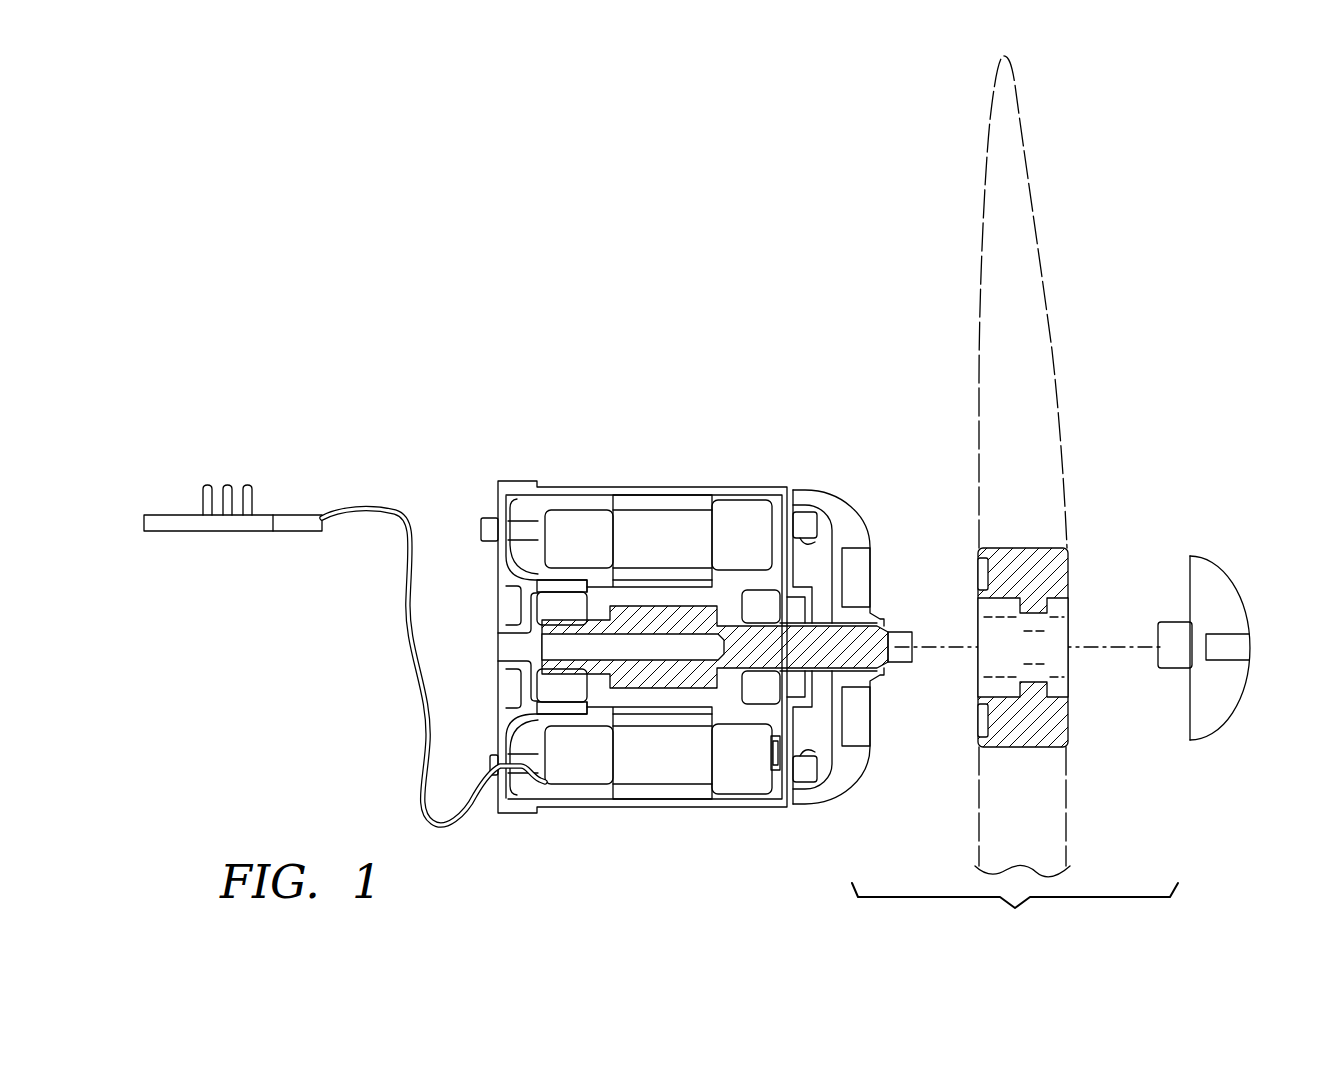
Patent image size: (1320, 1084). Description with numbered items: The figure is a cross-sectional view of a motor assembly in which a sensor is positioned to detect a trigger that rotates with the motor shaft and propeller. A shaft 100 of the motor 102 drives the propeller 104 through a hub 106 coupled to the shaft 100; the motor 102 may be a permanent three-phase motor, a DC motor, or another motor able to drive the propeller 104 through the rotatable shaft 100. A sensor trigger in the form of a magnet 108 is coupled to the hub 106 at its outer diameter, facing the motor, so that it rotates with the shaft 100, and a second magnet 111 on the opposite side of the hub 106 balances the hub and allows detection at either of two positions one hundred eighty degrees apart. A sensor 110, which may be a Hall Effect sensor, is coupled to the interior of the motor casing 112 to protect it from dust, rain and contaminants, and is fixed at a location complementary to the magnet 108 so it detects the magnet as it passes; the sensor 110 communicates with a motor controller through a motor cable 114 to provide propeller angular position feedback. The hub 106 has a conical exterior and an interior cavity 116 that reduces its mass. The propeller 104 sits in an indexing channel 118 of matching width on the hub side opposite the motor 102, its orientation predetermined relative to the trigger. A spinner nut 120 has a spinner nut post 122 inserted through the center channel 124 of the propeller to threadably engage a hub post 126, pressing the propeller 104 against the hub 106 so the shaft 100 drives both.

The shaft 100 is at (850, 650).
The motor 102 is at (820, 614).
The propeller 104 is at (1018, 482).
The hub 106 is at (871, 536).
The magnet 108 is at (837, 764).
The sensor 110 is at (777, 757).
The second magnet 111 is at (805, 531).
The motor casing 112 is at (616, 808).
The motor cable 114 is at (346, 515).
The interior cavity 116 is at (820, 574).
The channel 118 is at (858, 730).
The spinner nut 120 is at (1222, 570).
The spinner nut post 122 is at (1166, 621).
The center channel 124 is at (1037, 662).
The hub post 126 is at (906, 664).